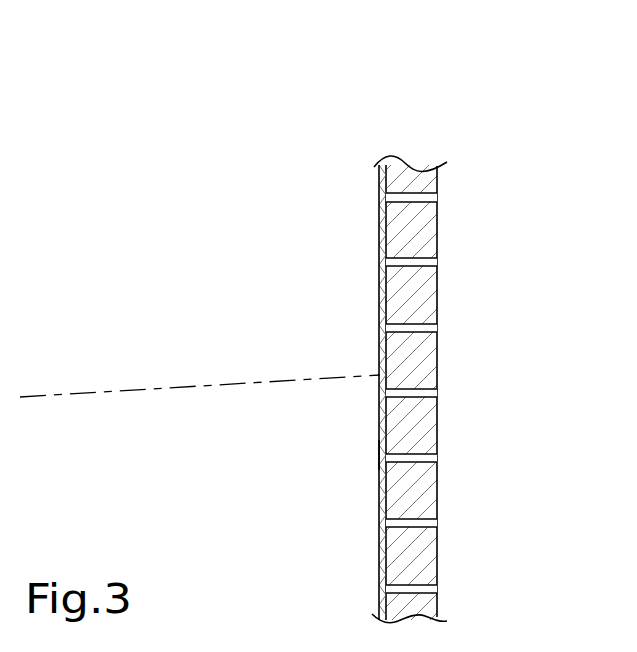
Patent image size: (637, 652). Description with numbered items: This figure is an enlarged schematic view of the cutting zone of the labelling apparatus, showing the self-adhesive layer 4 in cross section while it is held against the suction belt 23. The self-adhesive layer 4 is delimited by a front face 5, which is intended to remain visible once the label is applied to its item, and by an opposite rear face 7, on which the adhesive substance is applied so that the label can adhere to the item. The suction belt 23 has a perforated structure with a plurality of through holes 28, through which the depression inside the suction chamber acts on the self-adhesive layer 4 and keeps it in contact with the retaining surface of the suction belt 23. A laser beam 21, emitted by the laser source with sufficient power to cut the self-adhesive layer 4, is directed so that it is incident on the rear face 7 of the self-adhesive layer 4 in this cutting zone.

The self-adhesive layer 4 is at (384, 232).
The front face 5 is at (388, 430).
The rear face 7 is at (385, 454).
The laser beam 21 is at (165, 388).
The suction belt 23 is at (417, 178).
The through holes 28 is at (422, 203).